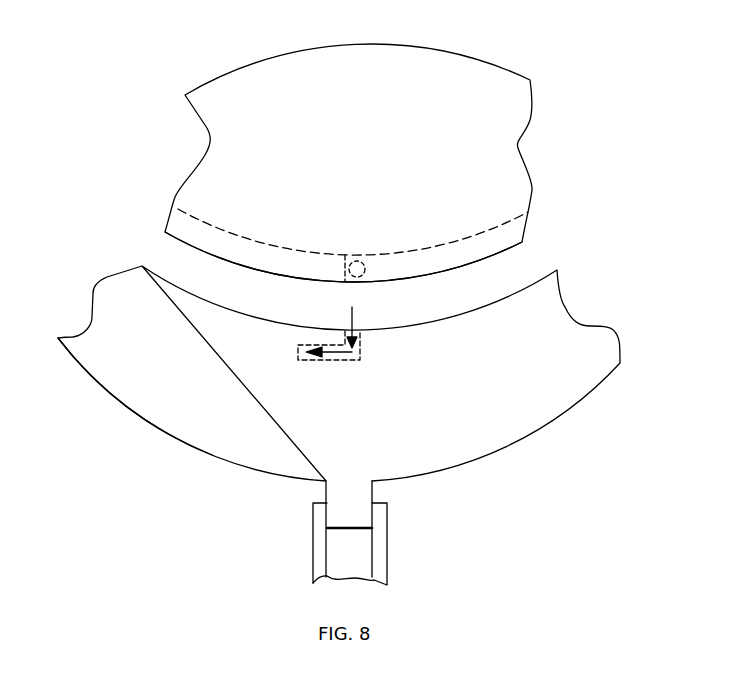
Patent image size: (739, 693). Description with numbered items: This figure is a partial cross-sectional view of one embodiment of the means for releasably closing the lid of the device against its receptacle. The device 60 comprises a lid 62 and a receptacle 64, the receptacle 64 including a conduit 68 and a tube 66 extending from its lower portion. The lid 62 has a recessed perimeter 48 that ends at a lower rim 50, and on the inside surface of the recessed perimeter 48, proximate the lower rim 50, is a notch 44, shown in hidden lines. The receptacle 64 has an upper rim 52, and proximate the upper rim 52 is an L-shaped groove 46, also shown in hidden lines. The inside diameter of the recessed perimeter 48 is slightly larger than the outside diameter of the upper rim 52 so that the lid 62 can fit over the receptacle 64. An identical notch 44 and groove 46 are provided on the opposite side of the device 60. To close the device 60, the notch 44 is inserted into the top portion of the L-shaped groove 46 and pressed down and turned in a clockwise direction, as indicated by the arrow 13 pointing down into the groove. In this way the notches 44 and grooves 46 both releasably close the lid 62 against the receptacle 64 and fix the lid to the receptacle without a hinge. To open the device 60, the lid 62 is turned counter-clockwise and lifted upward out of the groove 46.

The device 60 is at (158, 60).
The lid 62 is at (497, 63).
The lower rim 50 is at (515, 250).
The recessed perimeter 48 is at (177, 208).
The notch 44 is at (367, 265).
The upper rim 52 is at (155, 273).
The receptacle 64 is at (213, 455).
The insertion direction arrow 13 is at (352, 317).
The L-shaped groove 46 is at (347, 360).
The conduit 68 is at (372, 490).
The tube 66 is at (387, 557).